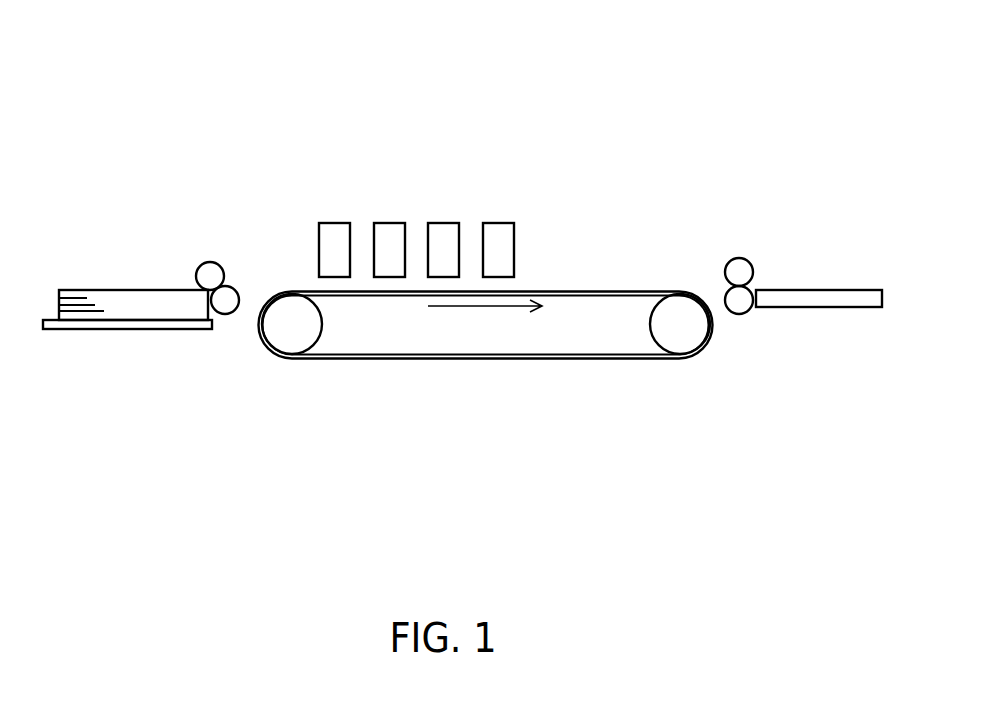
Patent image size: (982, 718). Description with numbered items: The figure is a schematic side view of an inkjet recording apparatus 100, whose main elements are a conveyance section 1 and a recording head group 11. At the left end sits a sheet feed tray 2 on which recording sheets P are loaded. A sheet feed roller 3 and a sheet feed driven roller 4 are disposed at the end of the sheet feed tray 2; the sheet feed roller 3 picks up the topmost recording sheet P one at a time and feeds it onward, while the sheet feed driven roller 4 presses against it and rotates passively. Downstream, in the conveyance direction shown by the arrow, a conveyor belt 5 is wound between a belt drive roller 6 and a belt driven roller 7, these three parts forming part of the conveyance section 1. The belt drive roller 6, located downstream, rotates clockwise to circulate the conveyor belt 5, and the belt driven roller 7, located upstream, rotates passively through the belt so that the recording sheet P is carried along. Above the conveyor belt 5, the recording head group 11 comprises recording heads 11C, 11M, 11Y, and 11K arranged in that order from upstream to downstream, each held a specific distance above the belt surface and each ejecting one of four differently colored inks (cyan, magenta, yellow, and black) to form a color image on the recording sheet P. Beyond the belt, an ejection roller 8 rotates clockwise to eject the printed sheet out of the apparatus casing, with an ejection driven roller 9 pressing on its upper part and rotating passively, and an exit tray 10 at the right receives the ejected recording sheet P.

The conveyance section 1 is at (458, 428).
The sheet feed tray 2 is at (91, 330).
The sheet feed roller 3 is at (210, 270).
The sheet feed driven roller 4 is at (225, 305).
The conveyor belt 5 is at (432, 360).
The belt drive roller 6 is at (680, 340).
The belt driven roller 7 is at (292, 340).
The ejection roller 8 is at (739, 305).
The ejection driven roller 9 is at (739, 266).
The exit tray 10 is at (803, 300).
The recording head group 11 is at (397, 95).
The recording head 11C is at (333, 232).
The recording head 11M is at (388, 232).
The recording head 11Y is at (443, 232).
The recording head 11K is at (499, 232).
The inkjet recording apparatus 100 is at (257, 185).
The recording sheet P is at (131, 300).